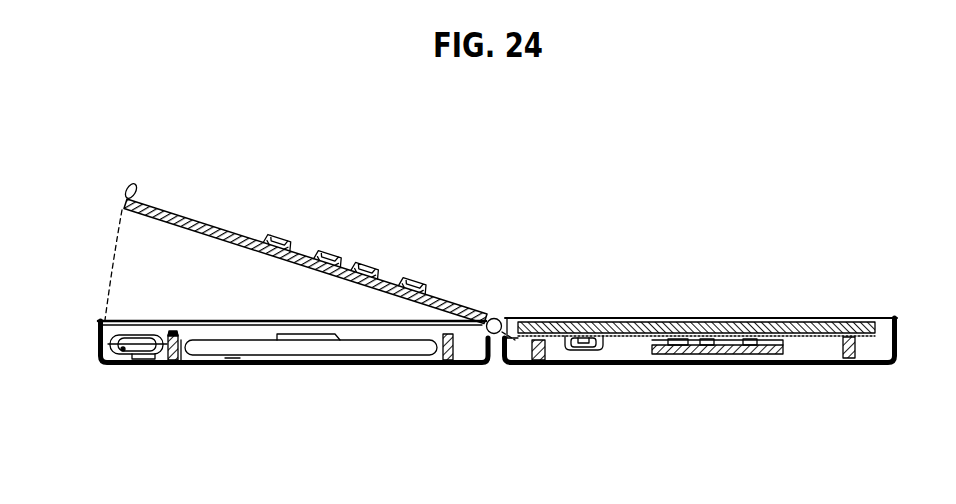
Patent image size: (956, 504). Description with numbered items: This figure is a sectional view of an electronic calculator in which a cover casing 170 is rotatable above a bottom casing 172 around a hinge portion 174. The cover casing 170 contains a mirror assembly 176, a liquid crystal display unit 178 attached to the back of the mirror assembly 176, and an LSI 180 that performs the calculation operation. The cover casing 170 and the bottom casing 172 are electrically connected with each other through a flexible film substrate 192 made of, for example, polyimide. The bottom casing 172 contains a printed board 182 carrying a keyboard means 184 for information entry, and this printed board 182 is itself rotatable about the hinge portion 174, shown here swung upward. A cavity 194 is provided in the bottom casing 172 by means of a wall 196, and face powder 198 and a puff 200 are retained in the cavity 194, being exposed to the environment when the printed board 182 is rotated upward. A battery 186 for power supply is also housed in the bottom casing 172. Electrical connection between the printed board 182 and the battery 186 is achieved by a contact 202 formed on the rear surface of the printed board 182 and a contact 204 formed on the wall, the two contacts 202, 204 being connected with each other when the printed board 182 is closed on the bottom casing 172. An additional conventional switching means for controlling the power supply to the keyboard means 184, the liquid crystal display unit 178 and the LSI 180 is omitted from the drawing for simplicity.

The cover casing 170 is at (855, 360).
The bottom casing 172 is at (382, 365).
The hinge portion 174 is at (497, 318).
The mirror assembly 176 is at (748, 322).
The liquid crystal display unit 178 is at (743, 365).
The LSI 180 is at (590, 322).
The printed board 182 is at (230, 230).
The keyboard means 184 is at (343, 258).
The battery 186 is at (128, 337).
The flexible film substrate 192 is at (513, 341).
The cavity 194 is at (233, 365).
The wall 196 is at (178, 365).
The face powder 198 is at (304, 365).
The puff 200 is at (332, 347).
The contact 202 is at (178, 226).
The contact 204 is at (172, 331).